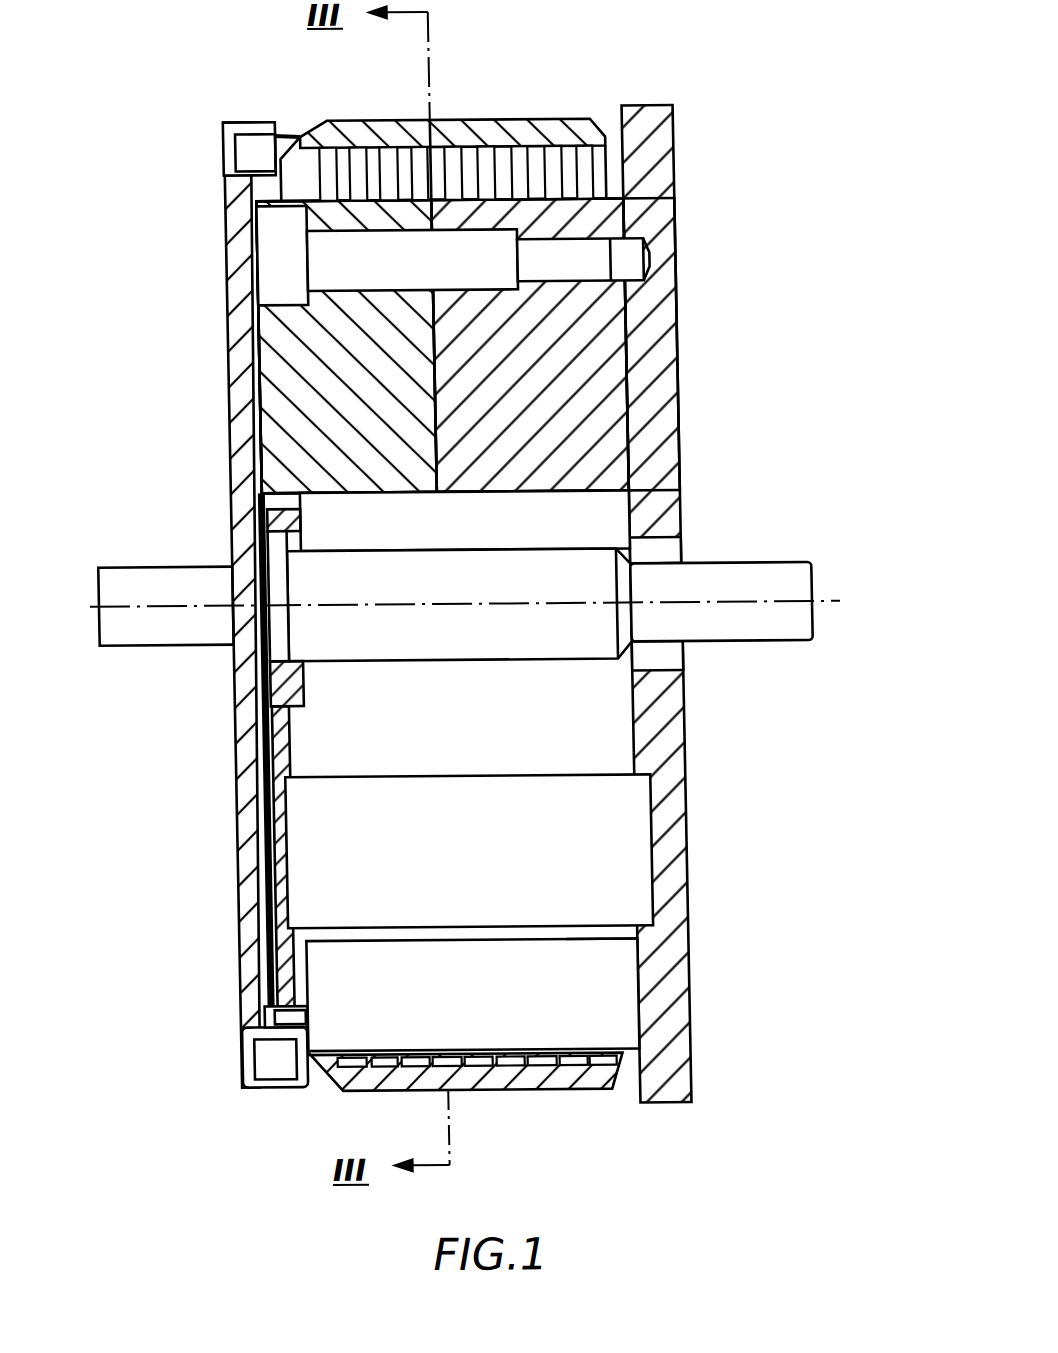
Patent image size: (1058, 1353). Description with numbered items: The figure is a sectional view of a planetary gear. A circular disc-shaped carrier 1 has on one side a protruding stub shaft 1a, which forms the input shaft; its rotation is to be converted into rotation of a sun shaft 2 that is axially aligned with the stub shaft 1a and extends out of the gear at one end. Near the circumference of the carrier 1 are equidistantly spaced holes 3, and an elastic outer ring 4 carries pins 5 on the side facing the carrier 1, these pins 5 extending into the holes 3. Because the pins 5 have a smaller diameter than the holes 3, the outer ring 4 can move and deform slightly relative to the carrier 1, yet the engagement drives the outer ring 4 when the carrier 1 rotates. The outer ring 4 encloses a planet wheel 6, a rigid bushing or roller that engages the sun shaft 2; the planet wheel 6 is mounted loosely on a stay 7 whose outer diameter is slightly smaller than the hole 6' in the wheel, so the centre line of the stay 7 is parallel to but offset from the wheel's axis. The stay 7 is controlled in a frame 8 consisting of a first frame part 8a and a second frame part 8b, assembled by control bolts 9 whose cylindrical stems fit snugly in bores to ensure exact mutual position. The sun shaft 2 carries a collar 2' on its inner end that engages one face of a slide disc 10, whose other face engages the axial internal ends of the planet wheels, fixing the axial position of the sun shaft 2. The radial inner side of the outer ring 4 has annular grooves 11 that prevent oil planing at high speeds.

The carrier 1 is at (231, 316).
The stub shaft 1a is at (123, 582).
The sun shaft 2 is at (464, 575).
The collar 2' is at (392, 634).
The holes 3 is at (254, 128).
The elastic outer ring 4 is at (487, 134).
The pins 5 is at (254, 153).
The planet wheel 6 is at (527, 995).
The hole 6' is at (662, 939).
The stay 7 is at (617, 858).
The frame 8 is at (703, 288).
The first frame part 8a is at (303, 409).
The second frame part 8b is at (619, 389).
The control bolts 9 is at (499, 268).
The slide disc 10 is at (262, 715).
The annular grooves 11 is at (396, 168).